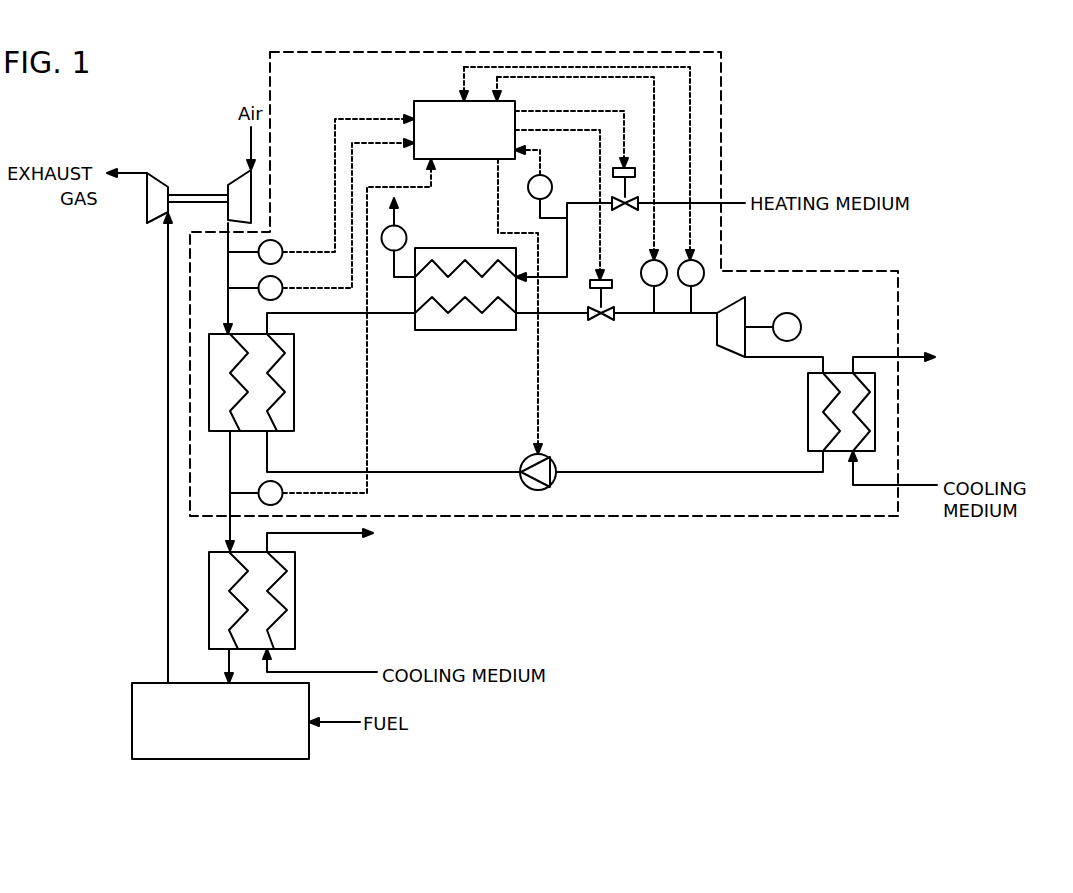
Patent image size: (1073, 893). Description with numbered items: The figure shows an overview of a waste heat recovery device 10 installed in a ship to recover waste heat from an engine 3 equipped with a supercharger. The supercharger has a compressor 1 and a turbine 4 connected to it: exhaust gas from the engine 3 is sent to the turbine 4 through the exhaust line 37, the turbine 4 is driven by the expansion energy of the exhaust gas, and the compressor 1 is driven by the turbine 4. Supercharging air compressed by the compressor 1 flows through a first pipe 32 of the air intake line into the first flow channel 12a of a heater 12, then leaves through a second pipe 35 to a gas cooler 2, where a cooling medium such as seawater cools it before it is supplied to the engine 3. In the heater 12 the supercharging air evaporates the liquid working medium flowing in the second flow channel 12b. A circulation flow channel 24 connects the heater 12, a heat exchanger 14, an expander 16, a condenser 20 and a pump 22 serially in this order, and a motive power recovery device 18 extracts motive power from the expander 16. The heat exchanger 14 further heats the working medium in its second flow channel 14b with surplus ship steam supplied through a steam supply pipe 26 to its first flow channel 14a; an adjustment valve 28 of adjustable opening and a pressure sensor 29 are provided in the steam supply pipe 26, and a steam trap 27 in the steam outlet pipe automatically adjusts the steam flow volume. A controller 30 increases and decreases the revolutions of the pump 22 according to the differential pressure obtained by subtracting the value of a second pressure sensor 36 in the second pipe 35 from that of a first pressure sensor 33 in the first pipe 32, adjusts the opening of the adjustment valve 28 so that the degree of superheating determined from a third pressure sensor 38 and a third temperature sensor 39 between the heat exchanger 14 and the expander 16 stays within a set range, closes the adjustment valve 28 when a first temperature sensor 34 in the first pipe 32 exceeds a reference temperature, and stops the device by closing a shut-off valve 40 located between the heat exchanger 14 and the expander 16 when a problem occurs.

The compressor 1 is at (240, 177).
The gas cooler 2 is at (295, 592).
The engine 3 is at (147, 683).
The turbine 4 is at (160, 173).
The waste heat recovery device 10 is at (730, 100).
The heater 12 is at (285, 375).
The first flow channel 12a is at (240, 386).
The second flow channel 12b is at (277, 361).
The heat exchanger 14 is at (468, 294).
The first flow channel 14a is at (478, 262).
The second flow channel 14b is at (497, 303).
The expander 16 is at (723, 347).
The motive power recovery device 18 is at (801, 323).
The condenser 20 is at (808, 412).
The pump 22 is at (556, 462).
The circulation flow channel 24 is at (433, 472).
The steam supply pipe 26 is at (567, 204).
The steam trap 27 is at (405, 232).
The adjustment valve 28 is at (627, 166).
The pressure sensor 29 is at (550, 177).
The controller 30 is at (436, 101).
The first pipe 32 is at (228, 268).
The first pressure sensor 33 is at (283, 250).
The first temperature sensor 34 is at (283, 286).
The second pipe 35 is at (230, 480).
The second pressure sensor 36 is at (258, 483).
The exhaust line 37 is at (168, 386).
The third pressure sensor 38 is at (645, 260).
The third temperature sensor 39 is at (681, 260).
The shut-off valve 40 is at (598, 279).